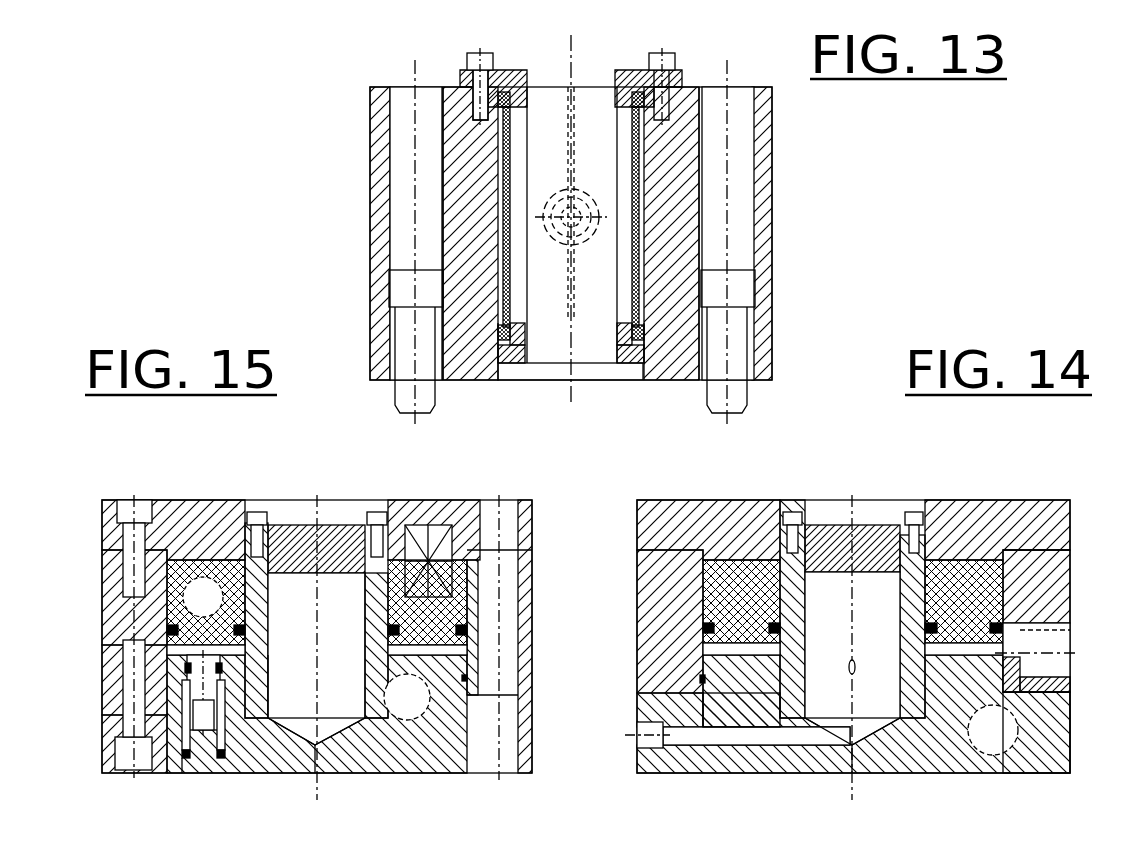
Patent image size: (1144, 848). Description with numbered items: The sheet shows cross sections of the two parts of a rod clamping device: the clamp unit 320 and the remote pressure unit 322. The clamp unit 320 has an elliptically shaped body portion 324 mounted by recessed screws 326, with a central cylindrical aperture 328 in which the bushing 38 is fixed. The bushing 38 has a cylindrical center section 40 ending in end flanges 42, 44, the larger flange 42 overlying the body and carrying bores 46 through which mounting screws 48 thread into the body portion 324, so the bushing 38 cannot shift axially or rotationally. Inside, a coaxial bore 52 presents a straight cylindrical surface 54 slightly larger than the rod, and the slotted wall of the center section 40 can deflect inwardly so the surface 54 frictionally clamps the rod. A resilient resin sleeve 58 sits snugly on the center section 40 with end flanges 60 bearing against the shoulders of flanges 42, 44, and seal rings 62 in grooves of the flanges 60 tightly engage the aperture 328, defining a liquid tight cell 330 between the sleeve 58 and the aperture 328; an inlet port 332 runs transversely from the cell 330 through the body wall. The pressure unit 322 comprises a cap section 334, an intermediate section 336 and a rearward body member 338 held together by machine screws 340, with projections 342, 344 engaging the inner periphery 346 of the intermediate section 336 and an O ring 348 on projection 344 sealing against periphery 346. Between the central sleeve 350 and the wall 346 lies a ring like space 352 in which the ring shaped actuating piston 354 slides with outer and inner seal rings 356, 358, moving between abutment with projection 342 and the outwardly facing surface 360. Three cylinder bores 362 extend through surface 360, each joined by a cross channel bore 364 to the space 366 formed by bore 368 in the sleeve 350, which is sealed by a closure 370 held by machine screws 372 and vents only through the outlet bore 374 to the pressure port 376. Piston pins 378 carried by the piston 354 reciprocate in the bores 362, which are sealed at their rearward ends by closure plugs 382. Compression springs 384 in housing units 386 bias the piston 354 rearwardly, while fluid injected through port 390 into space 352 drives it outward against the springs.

In FIG. 13, the bushing 38 is at (522, 368).
In FIG. 13, the center section 40 is at (617, 325).
In FIG. 13, the end flange 42 is at (628, 70).
In FIG. 13, the end flange 44 is at (638, 363).
In FIG. 13, the bores 46 is at (475, 70).
In FIG. 13, the mounting screws 48 is at (485, 53).
In FIG. 13, the bore 52 is at (600, 92).
In FIG. 13, the cylindrical surface 54 is at (617, 140).
In FIG. 13, the sleeve 58 is at (632, 178).
In FIG. 13, the end flanges 60 is at (505, 90).
In FIG. 13, the seal rings 62 is at (505, 110).
In FIG. 13, the clamp unit 320 is at (783, 137).
In FIG. 15, the pressure unit 322 is at (230, 495).
In FIG. 14, the pressure unit 322 is at (965, 495).
In FIG. 13, the body portion 324 is at (372, 185).
In FIG. 13, the recessed screws 326 is at (390, 290).
In FIG. 13, the cylindrical aperture 328 is at (773, 178).
In FIG. 13, the cell 330 is at (498, 120).
In FIG. 13, the inlet port 332 is at (560, 222).
In FIG. 15, the cap section 334 is at (102, 515).
In FIG. 14, the cap section 334 is at (1070, 525).
In FIG. 15, the intermediate section 336 is at (102, 630).
In FIG. 14, the intermediate section 336 is at (1050, 585).
In FIG. 15, the rearward body member 338 is at (102, 715).
In FIG. 14, the rearward body member 338 is at (1070, 733).
In FIG. 15, the machine screws 340 is at (120, 505).
In FIG. 15, the circular projection 342 is at (167, 562).
In FIG. 14, the circular projection 342 is at (1005, 552).
In FIG. 14, the circular projection 344 is at (1025, 685).
In FIG. 15, the inner cylindrical periphery 346 is at (460, 605).
In FIG. 14, the inner cylindrical periphery 346 is at (1000, 612).
In FIG. 15, the O ring 348 is at (470, 678).
In FIG. 14, the O ring 348 is at (703, 678).
In FIG. 15, the sleeve 350 is at (352, 560).
In FIG. 15, the ring like space 352 is at (250, 650).
In FIG. 14, the ring like space 352 is at (780, 648).
In FIG. 15, the actuating piston 354 is at (222, 608).
In FIG. 14, the actuating piston 354 is at (732, 560).
In FIG. 15, the outer seal ring 356 is at (462, 630).
In FIG. 14, the outer seal ring 356 is at (700, 583).
In FIG. 15, the inner seal ring 358 is at (343, 610).
In FIG. 14, the inner seal ring 358 is at (810, 622).
In FIG. 15, the outwardly facing surface 360 is at (385, 655).
In FIG. 14, the outwardly facing surface 360 is at (978, 680).
In FIG. 15, the cylinder bores 362 is at (195, 700).
In FIG. 15, the cross channel bore 364 is at (245, 760).
In FIG. 14, the cross channel bore 364 is at (858, 668).
In FIG. 15, the space 366 is at (298, 745).
In FIG. 14, the space 366 is at (896, 634).
In FIG. 15, the bore 368 is at (340, 745).
In FIG. 14, the bore 368 is at (862, 745).
In FIG. 15, the closure 370 is at (305, 525).
In FIG. 14, the closure 370 is at (845, 525).
In FIG. 15, the machine screws 372 is at (257, 512).
In FIG. 14, the machine screws 372 is at (790, 512).
In FIG. 14, the outlet bore 374 is at (765, 745).
In FIG. 14, the pressure port 376 is at (663, 748).
In FIG. 15, the piston pins 378 is at (185, 670).
In FIG. 15, the closure plug 382 is at (206, 730).
In FIG. 15, the compression springs 384 is at (452, 548).
In FIG. 15, the housing units 386 is at (420, 525).
In FIG. 14, the port 390 is at (1030, 640).